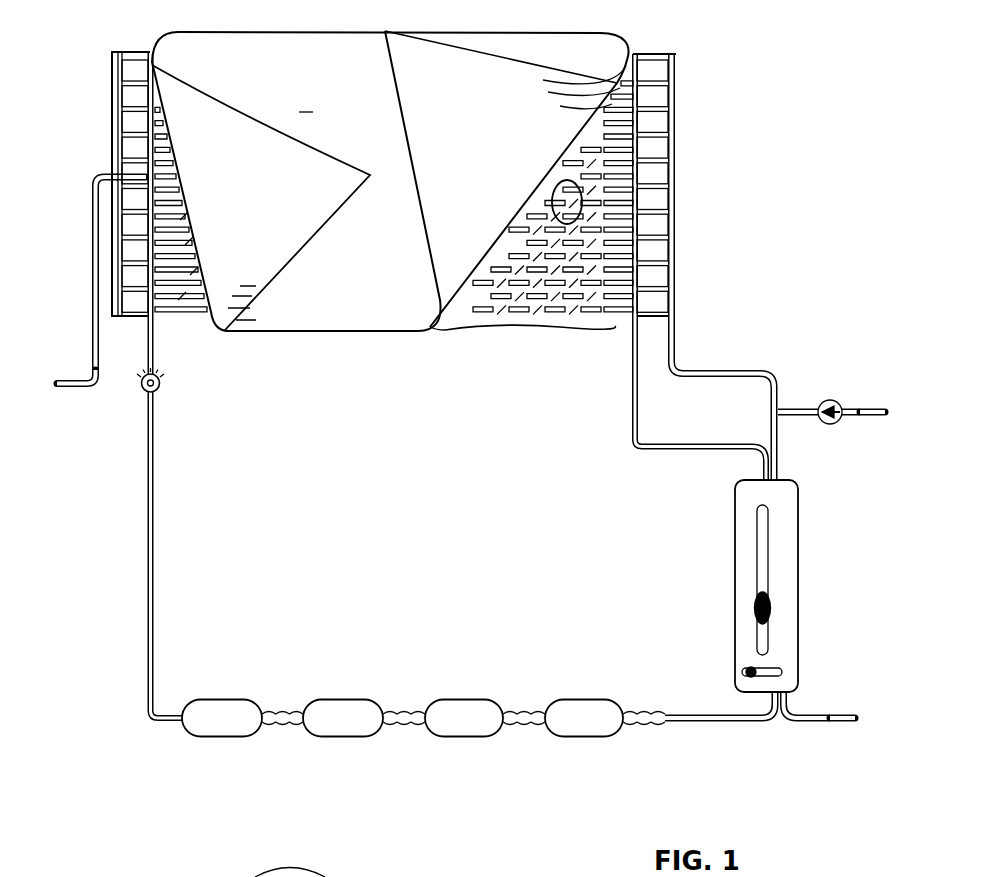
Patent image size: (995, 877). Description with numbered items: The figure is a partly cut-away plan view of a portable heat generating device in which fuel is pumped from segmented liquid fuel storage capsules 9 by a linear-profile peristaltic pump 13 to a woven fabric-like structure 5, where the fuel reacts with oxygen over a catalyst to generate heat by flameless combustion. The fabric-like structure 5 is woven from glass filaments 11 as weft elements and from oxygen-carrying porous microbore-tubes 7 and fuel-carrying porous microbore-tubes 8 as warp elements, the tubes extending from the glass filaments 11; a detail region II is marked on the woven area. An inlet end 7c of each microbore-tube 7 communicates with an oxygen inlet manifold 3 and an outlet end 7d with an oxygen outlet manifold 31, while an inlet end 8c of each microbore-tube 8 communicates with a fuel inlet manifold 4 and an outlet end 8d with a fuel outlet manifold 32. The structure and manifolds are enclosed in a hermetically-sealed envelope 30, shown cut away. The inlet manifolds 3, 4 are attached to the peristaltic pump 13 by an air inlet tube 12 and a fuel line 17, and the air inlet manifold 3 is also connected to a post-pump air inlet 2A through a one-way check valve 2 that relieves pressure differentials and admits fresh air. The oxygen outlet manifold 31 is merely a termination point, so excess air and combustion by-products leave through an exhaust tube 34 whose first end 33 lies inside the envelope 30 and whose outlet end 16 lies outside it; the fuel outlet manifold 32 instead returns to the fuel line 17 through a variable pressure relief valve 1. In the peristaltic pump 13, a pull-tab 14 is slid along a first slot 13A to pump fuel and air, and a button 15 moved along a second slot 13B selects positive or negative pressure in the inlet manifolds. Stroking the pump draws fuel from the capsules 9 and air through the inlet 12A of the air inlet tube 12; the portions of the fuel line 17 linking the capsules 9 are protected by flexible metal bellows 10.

The variable pressure relief valve 1 is at (163, 385).
The one-way check valve 2 is at (830, 400).
The post-pump air inlet 2A is at (887, 410).
The oxygen inlet manifold 3 is at (675, 330).
The fuel inlet manifold 4 is at (628, 403).
The fabric-like structure 5 is at (390, 181).
The oxygen-carrying porous microbore-tubes 7 is at (656, 322).
The inlet end of microbore-tube 7 7c is at (670, 310).
The outlet end of microbore-tube 7 7d is at (135, 318).
The fuel-carrying porous microbore-tubes 8 is at (622, 320).
The inlet end of microbore-tube 8 8c is at (630, 322).
The outlet end of microbore-tube 8 8d is at (162, 318).
The liquid fuel storage capsules 9 is at (245, 694).
The flexible metal bellows 10 is at (648, 733).
The glass filaments 11 is at (438, 345).
The air inlet tube 12 is at (742, 372).
The inlet of the air inlet tube 12A is at (858, 722).
The linear-profile peristaltic pump 13 is at (800, 578).
The first slot 13A is at (768, 520).
The second slot 13B is at (775, 677).
The pull-tab 14 is at (768, 612).
The button 15 is at (741, 664).
The outlet end of exhaust tube 16 is at (57, 379).
The fuel line 17 is at (156, 512).
The hermetically-sealed envelope 30 is at (290, 334).
The oxygen outlet manifold 31 is at (112, 110).
The fuel outlet manifold 32 is at (147, 88).
The first end of exhaust tube 33 is at (146, 170).
The exhaust tube 34 is at (93, 214).
The detail circle II is at (575, 195).